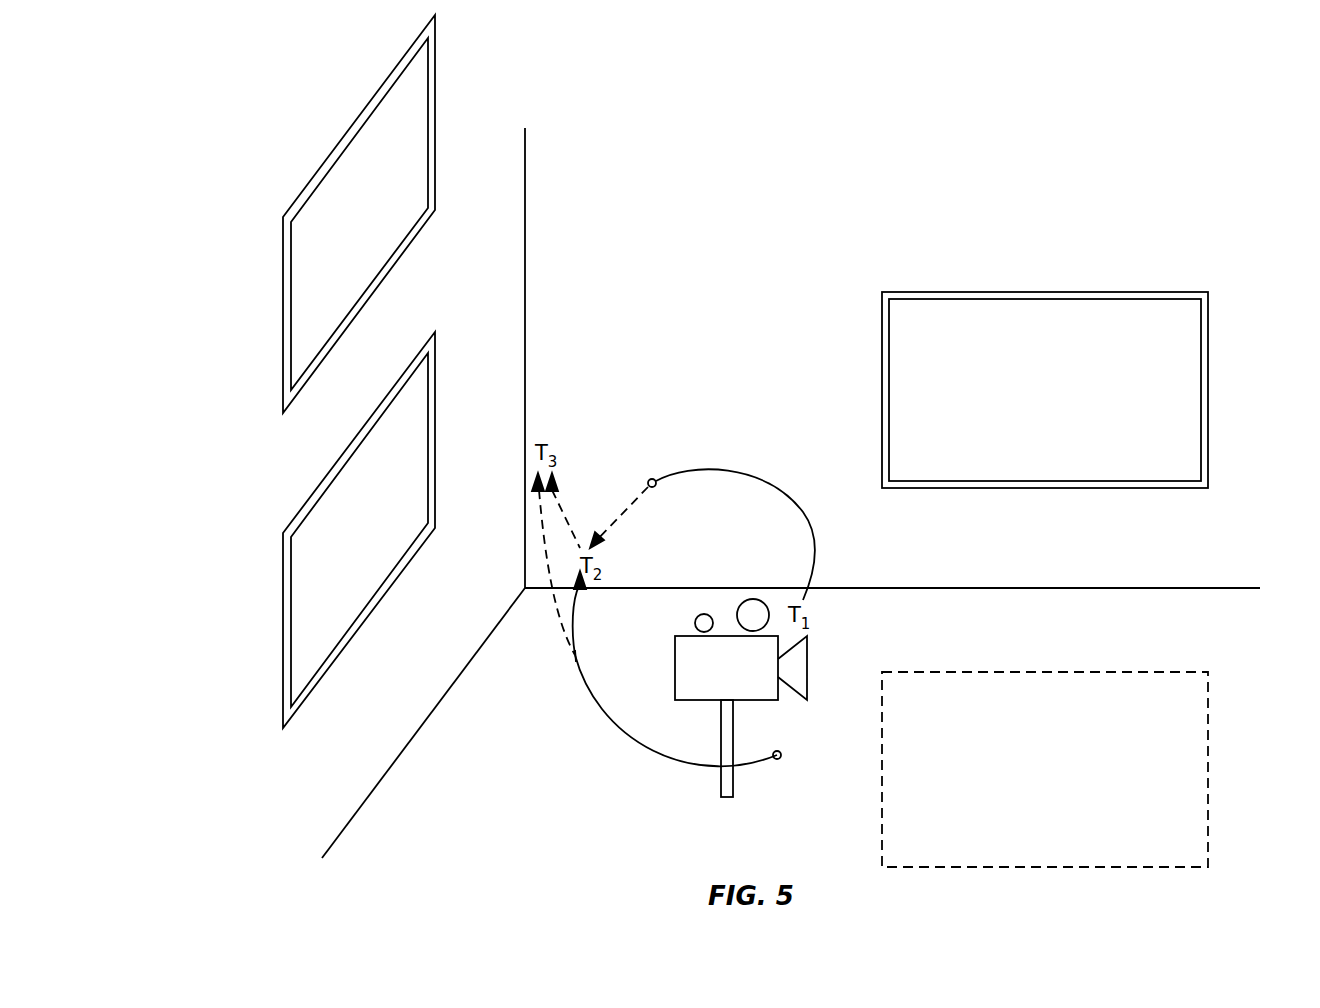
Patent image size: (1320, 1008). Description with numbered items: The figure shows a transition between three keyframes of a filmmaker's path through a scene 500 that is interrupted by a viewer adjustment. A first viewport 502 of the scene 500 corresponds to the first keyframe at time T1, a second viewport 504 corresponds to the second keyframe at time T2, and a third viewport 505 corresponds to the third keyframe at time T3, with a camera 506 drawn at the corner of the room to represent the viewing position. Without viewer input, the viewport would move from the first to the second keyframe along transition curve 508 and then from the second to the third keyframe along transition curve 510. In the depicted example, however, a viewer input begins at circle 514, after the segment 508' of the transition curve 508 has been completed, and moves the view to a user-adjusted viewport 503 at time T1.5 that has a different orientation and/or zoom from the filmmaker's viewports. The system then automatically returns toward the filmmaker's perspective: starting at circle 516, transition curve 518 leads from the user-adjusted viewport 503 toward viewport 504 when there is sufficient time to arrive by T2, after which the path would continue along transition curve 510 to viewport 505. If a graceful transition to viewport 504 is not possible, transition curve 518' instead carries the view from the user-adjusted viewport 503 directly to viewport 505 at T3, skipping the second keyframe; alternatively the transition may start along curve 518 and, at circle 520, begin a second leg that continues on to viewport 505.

The scene 500 is at (723, 136).
The first viewport 502 is at (1208, 390).
The user-adjusted viewport 503 is at (1208, 757).
The second viewport 504 is at (283, 632).
The third viewport 505 is at (283, 318).
The virtual camera 506 is at (675, 668).
The transition curve 508 is at (627, 528).
The segment of transition curve 508' is at (735, 504).
The transition curve 510 is at (557, 502).
The circle 514 is at (650, 478).
The circle 516 is at (779, 762).
The transition curve 518 is at (675, 696).
The transition curve 518' is at (537, 566).
The circle 520 is at (578, 656).